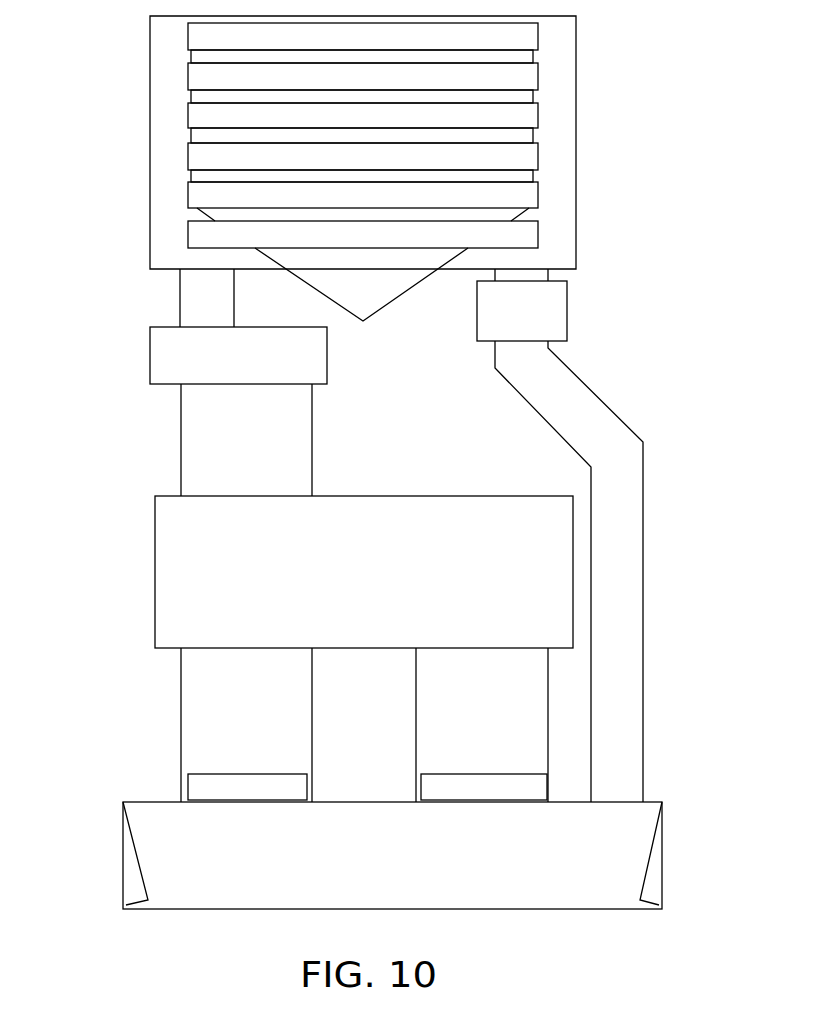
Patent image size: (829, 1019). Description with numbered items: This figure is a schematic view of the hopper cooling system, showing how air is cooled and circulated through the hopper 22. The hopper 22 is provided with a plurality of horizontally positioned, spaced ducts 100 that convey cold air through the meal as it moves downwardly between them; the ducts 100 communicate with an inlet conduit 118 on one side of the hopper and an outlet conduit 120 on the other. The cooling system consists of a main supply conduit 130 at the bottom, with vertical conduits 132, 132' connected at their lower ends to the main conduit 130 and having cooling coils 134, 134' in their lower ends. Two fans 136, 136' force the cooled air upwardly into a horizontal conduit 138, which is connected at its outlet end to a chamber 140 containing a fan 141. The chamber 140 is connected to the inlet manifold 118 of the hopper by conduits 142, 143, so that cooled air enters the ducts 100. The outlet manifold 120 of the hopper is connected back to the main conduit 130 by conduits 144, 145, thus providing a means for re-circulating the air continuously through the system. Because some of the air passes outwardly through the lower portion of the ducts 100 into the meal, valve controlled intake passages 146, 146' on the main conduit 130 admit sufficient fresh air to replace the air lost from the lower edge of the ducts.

The ducts 100 is at (366, 46).
The inlet conduit 118 is at (157, 132).
The outlet conduit 120 is at (570, 140).
The hopper 22 is at (388, 286).
The conduit 143 is at (180, 307).
The conduit 142 is at (161, 358).
The chamber 140 is at (188, 453).
The fan 141 is at (283, 442).
The horizontal conduit 138 is at (172, 587).
The fan 136 is at (171, 725).
The vertical conduit 132 is at (333, 725).
The vertical conduit 132' is at (391, 725).
The fan 136' is at (558, 725).
The cooling coil 134 is at (247, 805).
The cooling coil 134' is at (484, 807).
The conduit 144 is at (557, 317).
The conduit 145 is at (637, 592).
The main supply conduit 130 is at (438, 895).
The valve controlled intake passage 146 is at (104, 853).
The valve controlled intake passage 146' is at (685, 853).